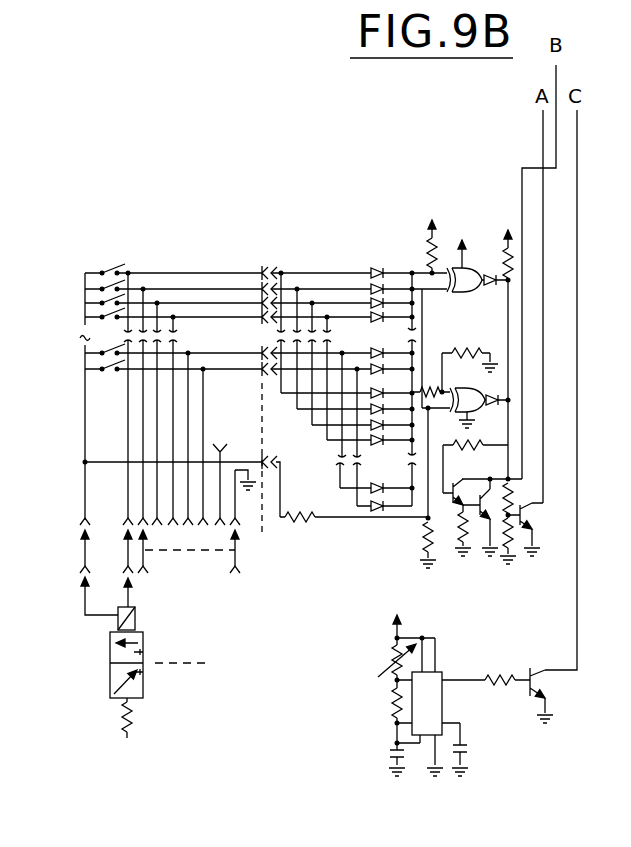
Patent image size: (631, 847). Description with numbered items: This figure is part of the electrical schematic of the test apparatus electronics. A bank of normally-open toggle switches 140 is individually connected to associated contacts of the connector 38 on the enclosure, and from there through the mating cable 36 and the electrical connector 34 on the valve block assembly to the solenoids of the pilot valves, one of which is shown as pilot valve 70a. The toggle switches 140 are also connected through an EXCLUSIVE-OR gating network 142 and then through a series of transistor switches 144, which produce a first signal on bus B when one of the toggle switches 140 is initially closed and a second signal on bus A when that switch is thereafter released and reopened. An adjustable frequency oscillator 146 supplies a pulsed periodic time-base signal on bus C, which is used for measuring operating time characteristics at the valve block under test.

The toggle switches 140 is at (122, 245).
The EXCLUSIVE-OR gating network 142 is at (465, 203).
The transistor switches 144 is at (489, 570).
The adjustable frequency oscillator 146 is at (385, 698).
The connector 38 is at (80, 522).
The mating cable 36 is at (78, 548).
The electrical connector 34 is at (80, 582).
The pilot valve 70a is at (98, 690).